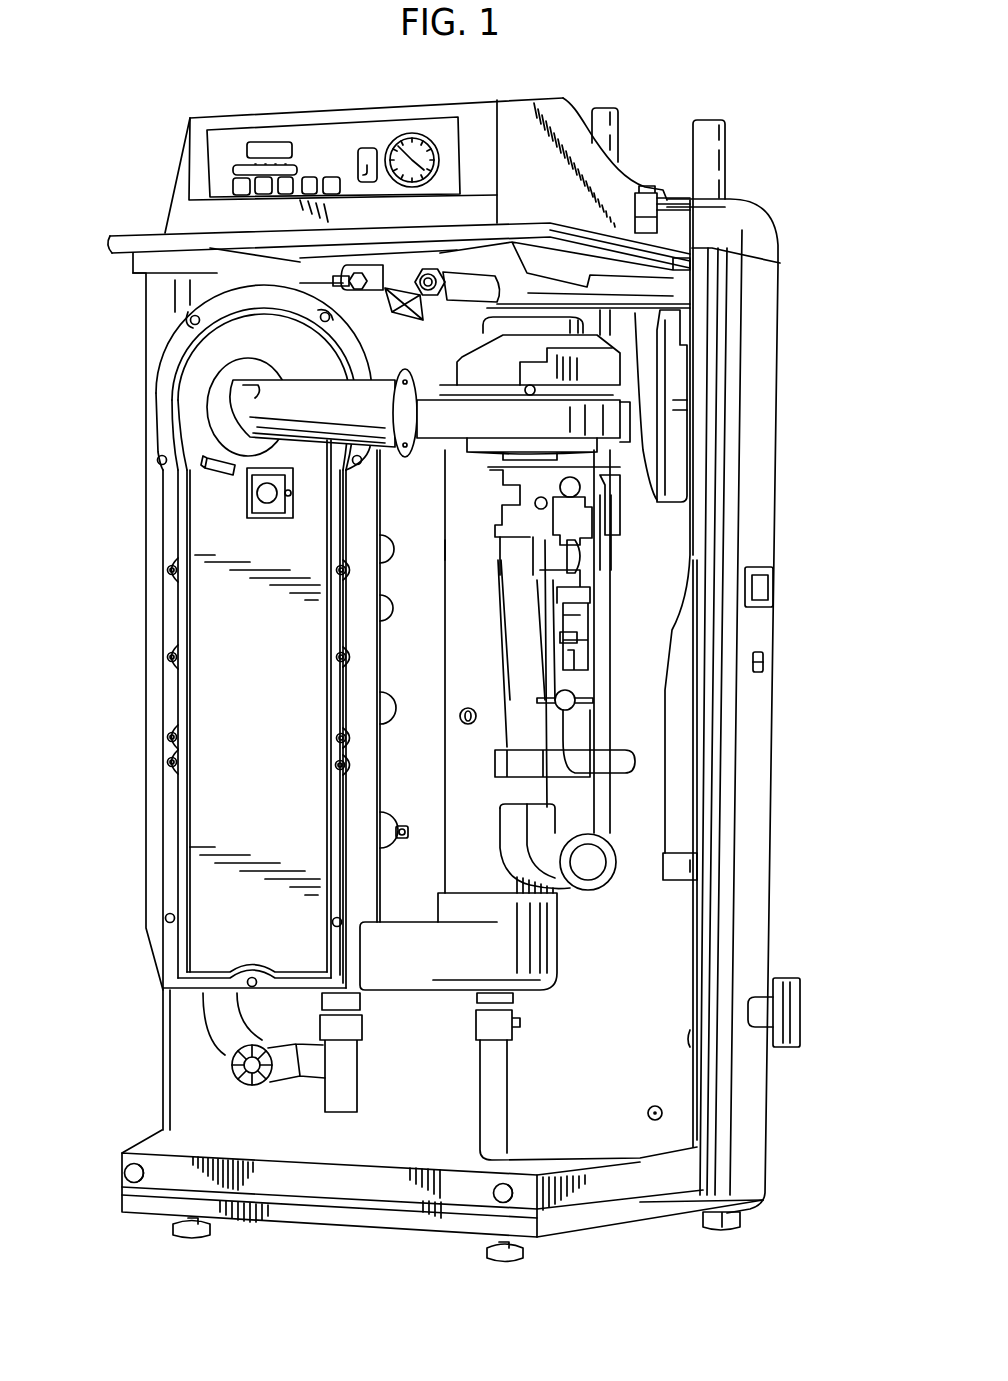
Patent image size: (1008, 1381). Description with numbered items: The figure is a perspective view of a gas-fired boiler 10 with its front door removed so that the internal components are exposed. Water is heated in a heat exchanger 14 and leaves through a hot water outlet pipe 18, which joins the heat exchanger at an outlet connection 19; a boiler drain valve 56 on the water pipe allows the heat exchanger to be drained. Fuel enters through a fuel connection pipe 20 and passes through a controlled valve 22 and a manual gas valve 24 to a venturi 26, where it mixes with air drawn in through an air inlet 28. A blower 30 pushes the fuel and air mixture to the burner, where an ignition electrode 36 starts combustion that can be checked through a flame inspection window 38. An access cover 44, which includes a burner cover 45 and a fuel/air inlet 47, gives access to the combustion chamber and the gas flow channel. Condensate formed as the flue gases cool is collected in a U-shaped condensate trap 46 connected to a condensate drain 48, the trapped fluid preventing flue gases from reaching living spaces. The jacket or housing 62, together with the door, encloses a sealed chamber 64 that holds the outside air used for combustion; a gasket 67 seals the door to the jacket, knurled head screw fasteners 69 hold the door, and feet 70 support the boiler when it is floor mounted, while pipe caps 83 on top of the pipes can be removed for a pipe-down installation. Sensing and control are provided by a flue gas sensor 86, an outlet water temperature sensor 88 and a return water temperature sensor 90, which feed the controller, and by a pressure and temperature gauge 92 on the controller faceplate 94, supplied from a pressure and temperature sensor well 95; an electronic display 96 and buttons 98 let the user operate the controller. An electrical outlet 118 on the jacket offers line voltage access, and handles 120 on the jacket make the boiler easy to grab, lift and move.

The boiler 10 is at (808, 262).
The heat exchanger 14 is at (150, 449).
The hot water outlet pipe 18 is at (727, 132).
The outlet connection 19 is at (345, 344).
The fuel connection pipe 20 is at (618, 122).
The controlled valve 22 is at (620, 500).
The manual gas valve 24 is at (613, 713).
The venturi 26 is at (593, 518).
The air inlet 28 is at (612, 876).
The blower 30 is at (610, 367).
The ignition electrode 36 is at (220, 470).
The flame inspection window 38 is at (256, 505).
The access cover 44 is at (200, 632).
The burner cover 45 is at (230, 398).
The fuel/air inlet 47 is at (235, 420).
The condensate trap 46 is at (487, 1121).
The condensate drain 48 is at (800, 1016).
The boiler drain valve 56 is at (237, 1076).
The jacket or housing 62 is at (760, 935).
The sealed chamber 64 is at (607, 1107).
The gasket 67 is at (720, 413).
The knurled head screw fasteners 69 is at (127, 1176).
The feet 70 is at (211, 1232).
The pipe caps 83 is at (695, 858).
The flue gas sensor 86 is at (460, 716).
The outlet water temperature sensor 88 is at (220, 273).
The return water temperature sensor 90 is at (396, 831).
The pressure and temperature gauge 92 is at (432, 128).
The faceplate 94 is at (233, 150).
The pressure and temperature sensor well 95 is at (345, 345).
The electronic display 96 is at (267, 140).
The buttons 98 is at (333, 178).
The electrical outlet 118 is at (765, 663).
The handles 120 is at (770, 591).